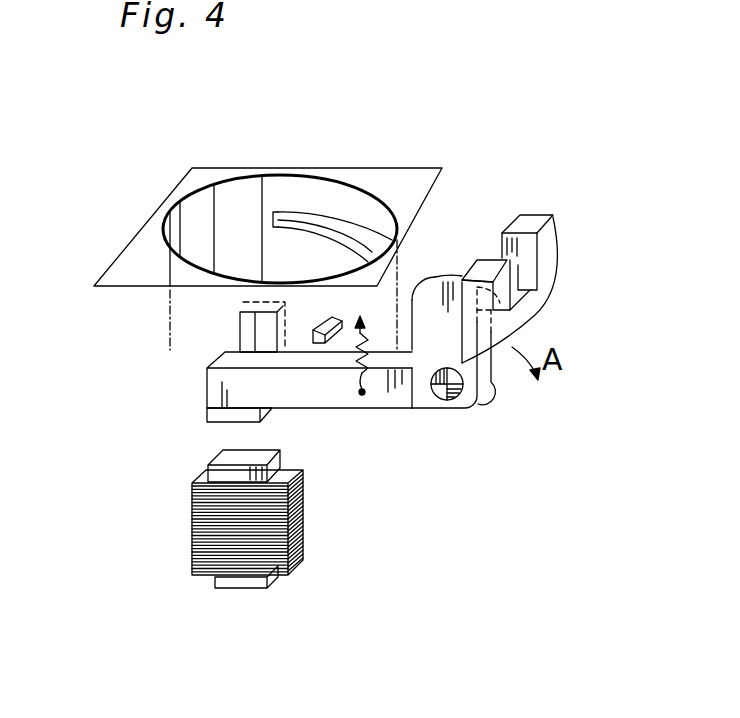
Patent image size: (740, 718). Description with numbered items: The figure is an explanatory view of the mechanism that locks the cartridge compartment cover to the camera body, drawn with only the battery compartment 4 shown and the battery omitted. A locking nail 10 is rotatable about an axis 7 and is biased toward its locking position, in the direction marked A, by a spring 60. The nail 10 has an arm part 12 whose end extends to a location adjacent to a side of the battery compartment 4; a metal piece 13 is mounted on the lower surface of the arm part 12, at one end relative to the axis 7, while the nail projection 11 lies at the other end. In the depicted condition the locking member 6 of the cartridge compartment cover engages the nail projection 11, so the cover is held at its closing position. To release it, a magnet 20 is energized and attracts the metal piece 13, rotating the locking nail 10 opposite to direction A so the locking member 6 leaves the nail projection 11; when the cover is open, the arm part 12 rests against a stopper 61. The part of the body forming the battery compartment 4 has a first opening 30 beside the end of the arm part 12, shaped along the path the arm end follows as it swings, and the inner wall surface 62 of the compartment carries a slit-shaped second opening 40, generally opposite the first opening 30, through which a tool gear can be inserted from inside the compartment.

The battery compartment 4 is at (248, 204).
The second opening 40 is at (342, 228).
The inner wall surface 62 is at (172, 212).
The nail projection 11 is at (447, 272).
The locking member 6 is at (548, 267).
The axis 7 is at (452, 398).
The locking nail 10 is at (385, 419).
The arm part 12 is at (333, 395).
The metal piece 13 is at (217, 420).
The first opening 30 is at (260, 328).
The stopper 61 is at (322, 345).
The spring 60 is at (365, 373).
The magnet 20 is at (240, 578).